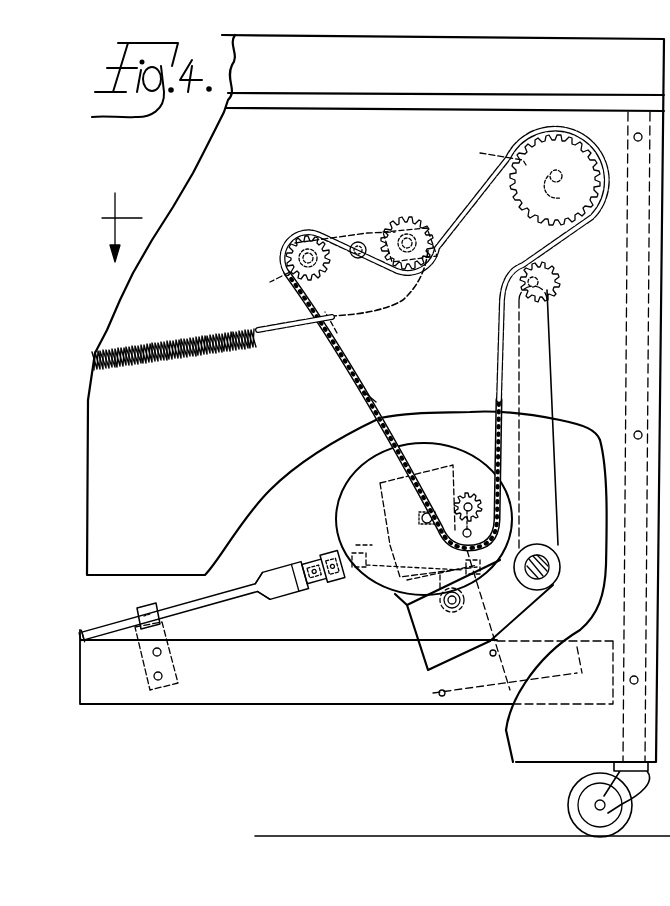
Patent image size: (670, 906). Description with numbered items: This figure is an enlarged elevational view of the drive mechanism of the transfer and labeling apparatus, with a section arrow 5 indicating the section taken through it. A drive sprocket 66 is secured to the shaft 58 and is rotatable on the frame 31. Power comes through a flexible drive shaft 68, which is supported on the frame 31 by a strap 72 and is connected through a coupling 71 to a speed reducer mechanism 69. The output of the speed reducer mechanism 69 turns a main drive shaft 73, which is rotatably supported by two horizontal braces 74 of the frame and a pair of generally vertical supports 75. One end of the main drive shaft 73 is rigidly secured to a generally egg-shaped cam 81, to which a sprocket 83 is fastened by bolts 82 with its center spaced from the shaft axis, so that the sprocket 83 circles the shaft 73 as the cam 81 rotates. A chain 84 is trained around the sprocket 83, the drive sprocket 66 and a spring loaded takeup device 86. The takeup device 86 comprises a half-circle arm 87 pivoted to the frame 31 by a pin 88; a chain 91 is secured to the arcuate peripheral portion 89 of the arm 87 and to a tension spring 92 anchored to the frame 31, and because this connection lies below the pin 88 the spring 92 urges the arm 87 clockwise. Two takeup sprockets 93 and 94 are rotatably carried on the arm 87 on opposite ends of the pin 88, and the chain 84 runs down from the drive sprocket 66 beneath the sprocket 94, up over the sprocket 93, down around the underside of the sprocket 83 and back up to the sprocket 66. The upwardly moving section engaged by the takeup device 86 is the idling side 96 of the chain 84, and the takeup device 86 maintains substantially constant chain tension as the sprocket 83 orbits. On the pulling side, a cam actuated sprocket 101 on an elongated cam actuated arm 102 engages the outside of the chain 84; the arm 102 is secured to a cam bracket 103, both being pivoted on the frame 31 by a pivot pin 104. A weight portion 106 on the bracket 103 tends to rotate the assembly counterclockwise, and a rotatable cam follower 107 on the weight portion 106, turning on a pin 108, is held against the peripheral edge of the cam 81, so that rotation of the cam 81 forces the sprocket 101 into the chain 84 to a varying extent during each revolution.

The section line arrow for FIG. 5 is at (118, 240).
The frame 31 is at (284, 714).
The shaft 58 is at (555, 180).
The drive sprocket 66 is at (506, 152).
The flexible drive shaft 68 is at (206, 598).
The speed reducer mechanism 69 is at (380, 508).
The coupling 71 is at (324, 590).
The strap 72 is at (140, 612).
The main drive shaft 73 is at (425, 525).
The horizontal braces 74 is at (215, 690).
The vertical supports 75 is at (420, 620).
The egg-shaped cam 81 is at (343, 478).
The bolts 82 is at (478, 510).
The sprocket 83 is at (478, 500).
The chain 84 is at (328, 370).
The spring loaded takeup device 86 is at (274, 258).
The arm 87 is at (392, 284).
The pin 88 is at (367, 240).
The arcuate peripheral portion 89 is at (337, 333).
The chain 91 is at (287, 328).
The tension spring 92 is at (183, 342).
The takeup sprocket 93 is at (296, 270).
The takeup sprocket 94 is at (405, 218).
The idling side 96 is at (366, 398).
The cam actuated sprocket 101 is at (556, 272).
The cam actuated arm 102 is at (547, 440).
The cam bracket 103 is at (535, 590).
The pivot pin 104 is at (552, 564).
The weight portion 106 is at (430, 670).
The cam follower 107 is at (452, 609).
The pin 108 is at (465, 598).